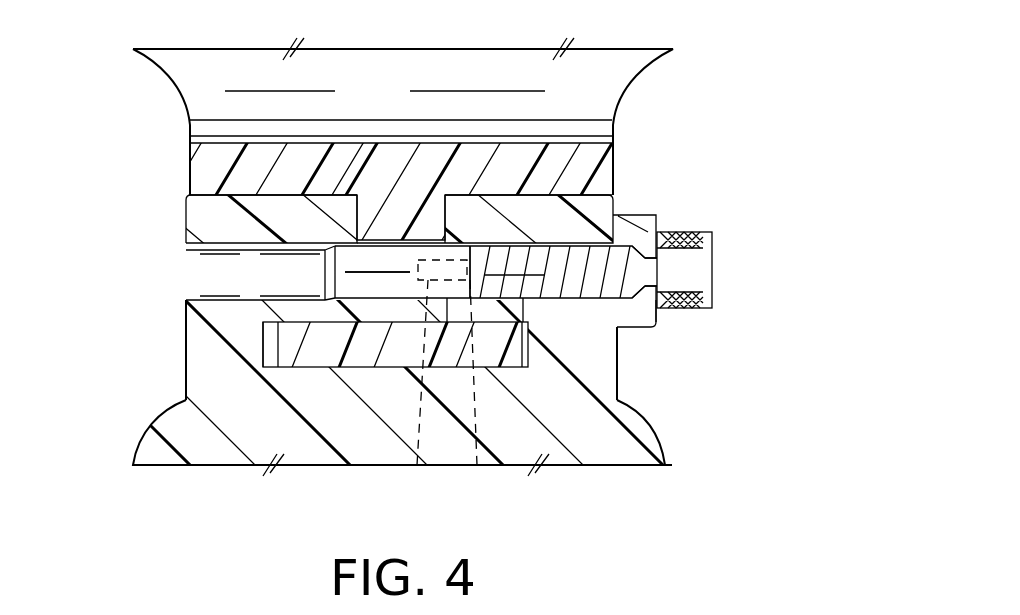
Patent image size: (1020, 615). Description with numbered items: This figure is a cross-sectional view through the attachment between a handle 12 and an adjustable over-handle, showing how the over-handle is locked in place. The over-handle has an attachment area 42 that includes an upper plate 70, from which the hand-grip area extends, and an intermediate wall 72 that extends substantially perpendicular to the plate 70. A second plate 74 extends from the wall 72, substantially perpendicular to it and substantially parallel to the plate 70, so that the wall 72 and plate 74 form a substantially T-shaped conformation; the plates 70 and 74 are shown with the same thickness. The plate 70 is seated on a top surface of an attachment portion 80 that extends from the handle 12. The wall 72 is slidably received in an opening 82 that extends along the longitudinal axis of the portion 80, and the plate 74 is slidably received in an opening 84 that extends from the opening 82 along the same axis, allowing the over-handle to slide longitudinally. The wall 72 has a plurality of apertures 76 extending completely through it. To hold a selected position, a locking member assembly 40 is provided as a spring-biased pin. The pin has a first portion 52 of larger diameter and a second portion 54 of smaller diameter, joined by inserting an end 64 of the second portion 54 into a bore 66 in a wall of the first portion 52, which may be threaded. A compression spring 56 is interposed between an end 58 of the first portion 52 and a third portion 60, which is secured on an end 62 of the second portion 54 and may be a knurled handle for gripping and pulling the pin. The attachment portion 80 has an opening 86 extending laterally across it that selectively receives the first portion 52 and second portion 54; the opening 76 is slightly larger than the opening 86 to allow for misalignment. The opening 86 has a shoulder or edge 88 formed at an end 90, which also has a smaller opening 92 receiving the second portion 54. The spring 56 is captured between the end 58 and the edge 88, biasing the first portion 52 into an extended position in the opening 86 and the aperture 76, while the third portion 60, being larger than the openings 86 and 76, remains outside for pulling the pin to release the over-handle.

The handle 12 is at (665, 443).
The locking member assembly 40 is at (700, 230).
The attachment area 42 is at (193, 155).
The first portion 52 is at (340, 262).
The second portion 54 is at (557, 245).
The compression spring 56 is at (633, 313).
The end 58 is at (506, 245).
The third portion 60 is at (708, 260).
The end 62 is at (650, 235).
The end 64 is at (477, 466).
The bore 66 is at (427, 292).
The upper plate 70 is at (213, 180).
The intermediate wall 72 is at (392, 220).
The second plate 74 is at (277, 340).
The apertures 76 is at (378, 280).
The attachment portion 80 is at (197, 217).
The opening 82 is at (443, 210).
The opening 84 is at (276, 355).
The opening 86 is at (202, 263).
The shoulder or edge 88 is at (623, 228).
The end 90 is at (648, 315).
The smaller opening 92 is at (657, 273).